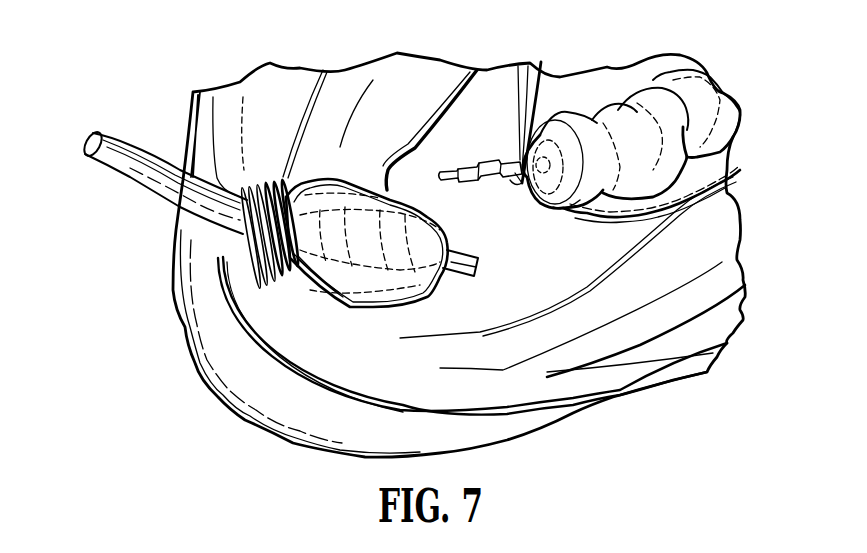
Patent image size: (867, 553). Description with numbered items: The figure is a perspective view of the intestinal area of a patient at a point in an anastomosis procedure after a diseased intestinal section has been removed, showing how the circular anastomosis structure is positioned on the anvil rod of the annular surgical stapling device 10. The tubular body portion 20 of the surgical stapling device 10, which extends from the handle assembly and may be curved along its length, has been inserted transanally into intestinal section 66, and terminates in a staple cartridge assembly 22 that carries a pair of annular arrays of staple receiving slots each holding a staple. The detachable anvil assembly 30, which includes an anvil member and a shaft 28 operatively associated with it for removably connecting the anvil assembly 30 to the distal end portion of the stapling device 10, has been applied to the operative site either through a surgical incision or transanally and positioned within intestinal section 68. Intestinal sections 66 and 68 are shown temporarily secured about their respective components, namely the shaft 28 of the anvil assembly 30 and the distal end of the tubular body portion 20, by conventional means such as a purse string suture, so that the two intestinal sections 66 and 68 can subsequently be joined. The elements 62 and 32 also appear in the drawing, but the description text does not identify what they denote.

The surgical stapling device 10 is at (164, 154).
The tubular body portion 20 is at (147, 167).
The intestinal section 66 is at (312, 200).
The staple cartridge assembly 22 is at (445, 293).
The anvil assembly 30 is at (492, 150).
The shaft 28 is at (503, 182).
The tab 62 is at (520, 184).
The collar 32 is at (571, 204).
The intestinal section 68 is at (620, 105).